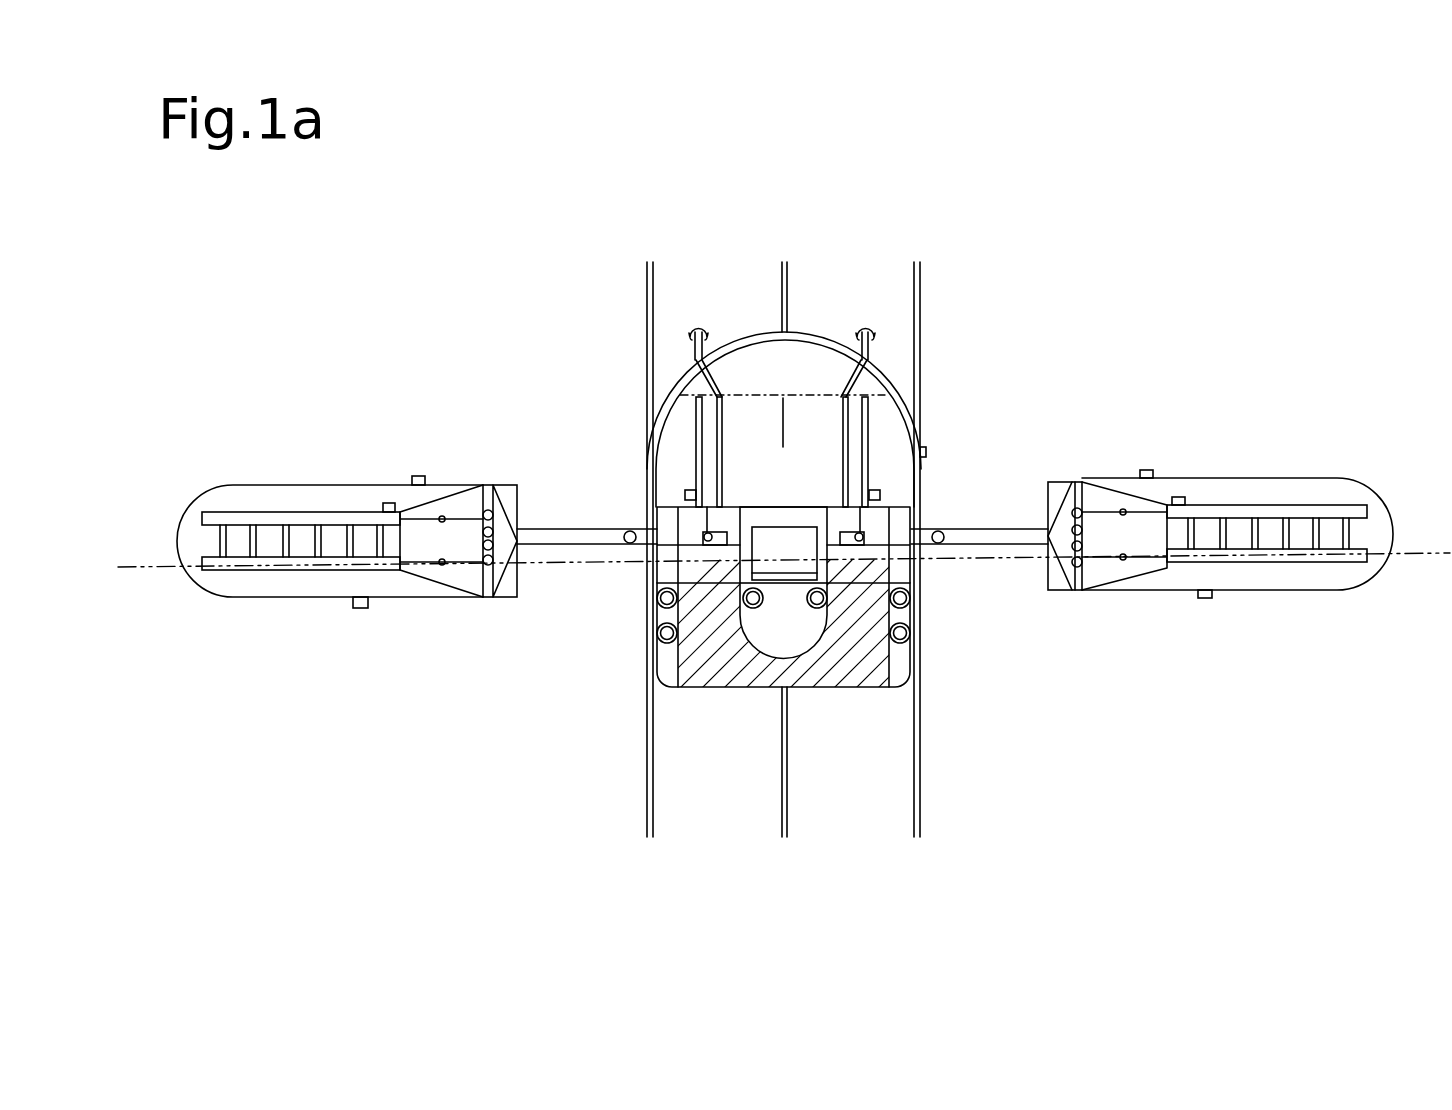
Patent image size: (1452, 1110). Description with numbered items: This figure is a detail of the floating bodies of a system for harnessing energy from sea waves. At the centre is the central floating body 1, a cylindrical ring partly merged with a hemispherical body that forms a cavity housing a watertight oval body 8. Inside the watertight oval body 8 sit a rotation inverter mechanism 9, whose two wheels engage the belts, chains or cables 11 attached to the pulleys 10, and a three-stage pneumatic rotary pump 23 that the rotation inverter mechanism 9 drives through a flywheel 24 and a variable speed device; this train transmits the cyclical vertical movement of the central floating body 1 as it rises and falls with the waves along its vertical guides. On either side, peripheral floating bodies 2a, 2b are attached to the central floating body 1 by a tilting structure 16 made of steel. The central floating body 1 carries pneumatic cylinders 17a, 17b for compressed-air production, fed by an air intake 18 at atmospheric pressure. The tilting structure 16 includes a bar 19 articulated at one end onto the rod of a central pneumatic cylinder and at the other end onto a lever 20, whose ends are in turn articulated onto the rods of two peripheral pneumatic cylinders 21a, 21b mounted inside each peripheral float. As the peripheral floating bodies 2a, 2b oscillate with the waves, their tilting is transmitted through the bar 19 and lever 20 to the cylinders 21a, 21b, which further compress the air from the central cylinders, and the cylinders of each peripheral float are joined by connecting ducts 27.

The central floating body 1 is at (891, 348).
The peripheral floating body 2a is at (1220, 524).
The peripheral floating body 2b is at (347, 494).
The watertight oval body 8 is at (739, 658).
The rotation inverter mechanism 9 is at (785, 598).
The pulleys 10 is at (667, 600).
The belts, chains or cables 11 is at (900, 600).
The tilting structure 16 is at (982, 505).
The pneumatic cylinder 17a is at (708, 457).
The pneumatic cylinder 17b is at (855, 450).
The air intake 18 is at (698, 328).
The bar 19 is at (687, 540).
The lever 20 is at (473, 503).
The peripheral pneumatic cylinder 21a is at (238, 517).
The peripheral pneumatic cylinder 21b is at (263, 562).
The three-stage pneumatic rotary pump 23 is at (793, 543).
The flywheel 24 is at (775, 577).
The connecting ducts 27 is at (1220, 533).